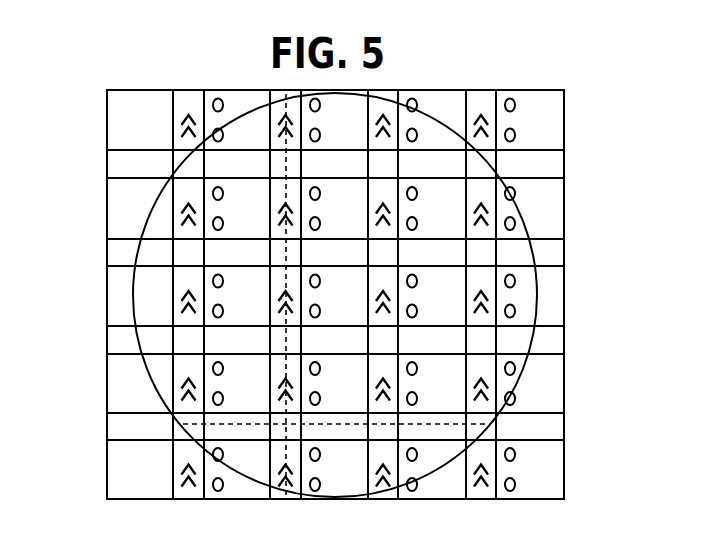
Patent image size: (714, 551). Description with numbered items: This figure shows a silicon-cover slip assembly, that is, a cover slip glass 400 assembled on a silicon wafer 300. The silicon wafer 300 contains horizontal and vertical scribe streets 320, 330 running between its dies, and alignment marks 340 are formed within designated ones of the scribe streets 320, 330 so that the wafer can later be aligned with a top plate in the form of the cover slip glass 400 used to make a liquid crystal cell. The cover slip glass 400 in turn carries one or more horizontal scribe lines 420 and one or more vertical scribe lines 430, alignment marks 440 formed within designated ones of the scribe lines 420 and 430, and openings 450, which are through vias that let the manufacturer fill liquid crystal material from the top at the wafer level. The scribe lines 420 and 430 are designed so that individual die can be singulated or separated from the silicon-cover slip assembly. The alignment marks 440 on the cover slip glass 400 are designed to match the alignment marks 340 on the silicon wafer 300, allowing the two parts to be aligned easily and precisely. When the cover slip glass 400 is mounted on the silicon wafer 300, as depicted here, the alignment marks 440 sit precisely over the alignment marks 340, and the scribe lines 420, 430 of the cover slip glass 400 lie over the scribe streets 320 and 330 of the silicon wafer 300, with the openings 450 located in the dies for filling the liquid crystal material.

The silicon wafer 300 is at (490, 73).
The horizontal scribe street 320 is at (442, 424).
The vertical scribe street 330 is at (286, 152).
The alignment mark 340 is at (481, 390).
The cover slip glass 400 is at (540, 124).
The horizontal scribe line 420 is at (167, 325).
The vertical scribe line 430 is at (170, 379).
The alignment mark 440 is at (485, 366).
The opening 450 is at (519, 444).